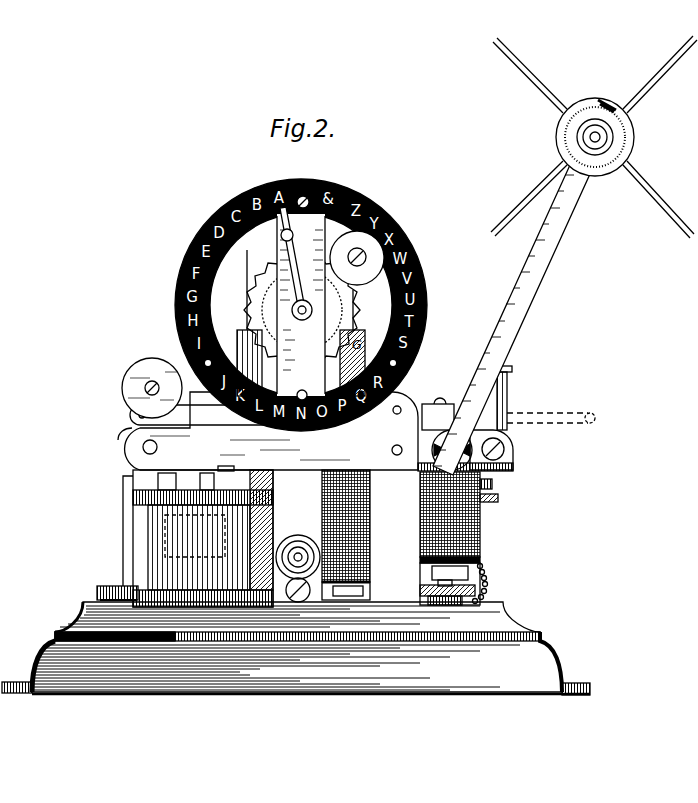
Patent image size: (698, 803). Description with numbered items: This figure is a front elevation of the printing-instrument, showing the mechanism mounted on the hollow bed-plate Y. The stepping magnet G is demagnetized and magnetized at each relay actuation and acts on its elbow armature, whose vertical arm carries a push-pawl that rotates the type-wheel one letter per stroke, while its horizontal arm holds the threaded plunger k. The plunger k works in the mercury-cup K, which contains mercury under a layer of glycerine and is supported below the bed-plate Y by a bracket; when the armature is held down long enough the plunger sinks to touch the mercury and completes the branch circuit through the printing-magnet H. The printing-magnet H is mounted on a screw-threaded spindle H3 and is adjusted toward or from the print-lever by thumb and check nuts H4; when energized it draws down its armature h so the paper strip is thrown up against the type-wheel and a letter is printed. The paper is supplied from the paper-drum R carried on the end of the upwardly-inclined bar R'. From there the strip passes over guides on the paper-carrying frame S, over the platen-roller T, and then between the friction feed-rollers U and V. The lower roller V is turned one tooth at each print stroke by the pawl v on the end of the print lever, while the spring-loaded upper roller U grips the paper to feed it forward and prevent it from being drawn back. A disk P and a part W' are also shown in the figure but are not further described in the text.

The paper-drum R is at (594, 137).
The upwardly-inclined bar R' is at (516, 309).
The shaft W' is at (551, 406).
The armature h is at (440, 404).
The printing-magnet H is at (459, 538).
The screw-threaded spindle H3 is at (486, 578).
The thumb and check nuts H4 is at (482, 598).
The adjusting nut H' is at (298, 558).
The magnet G is at (346, 535).
The mercury-cup K is at (185, 538).
The plunger k is at (236, 462).
The upper friction feed-roller U is at (152, 388).
The paper-carrying frame S is at (215, 413).
The pawl v is at (130, 430).
The lower friction feed-roller V is at (125, 458).
The bed-plate Y is at (296, 648).
The disc P is at (357, 260).
The platen-roller T is at (302, 310).